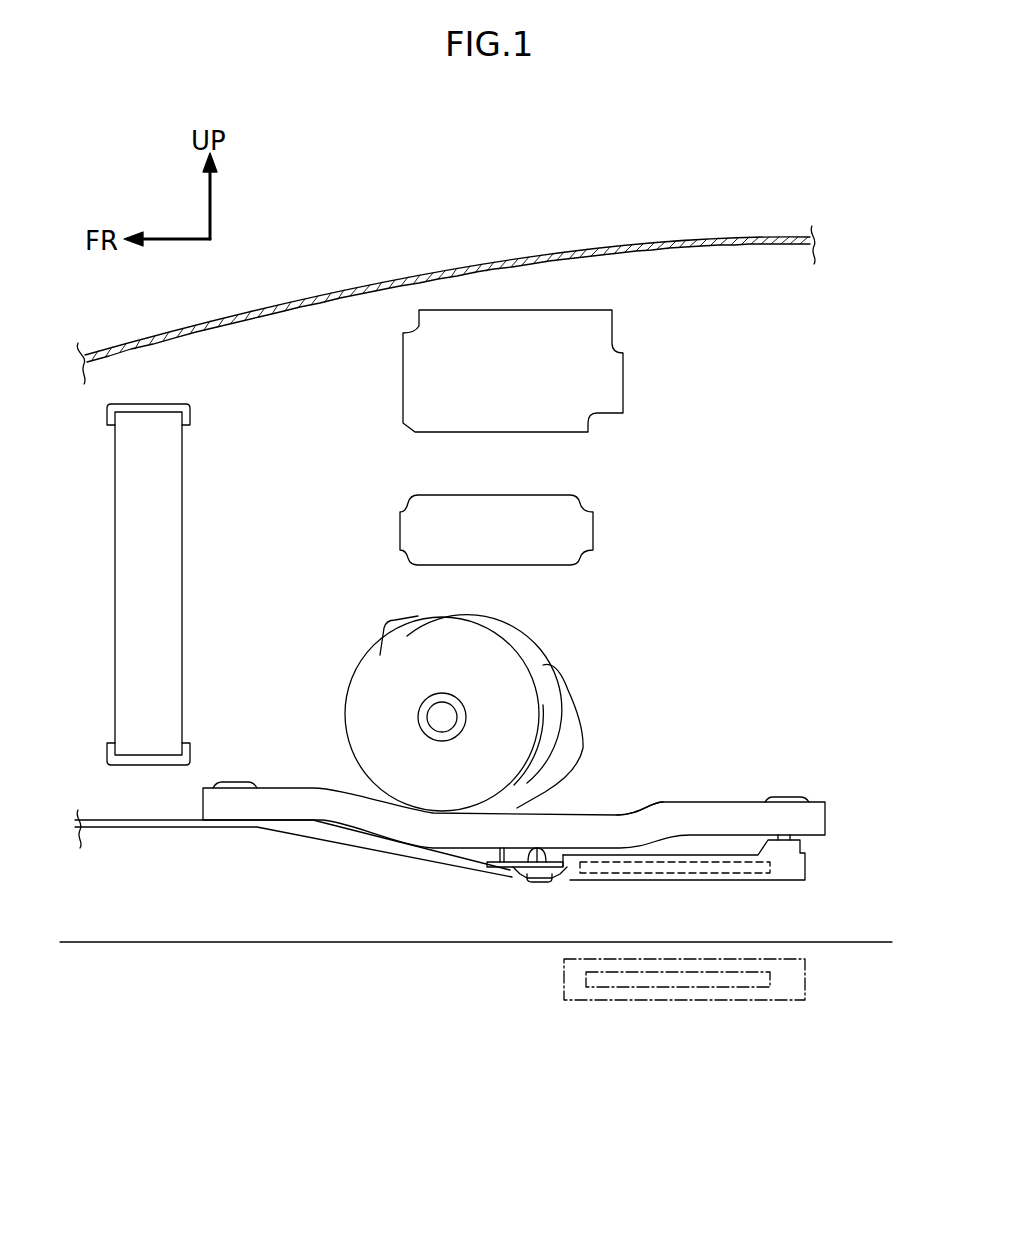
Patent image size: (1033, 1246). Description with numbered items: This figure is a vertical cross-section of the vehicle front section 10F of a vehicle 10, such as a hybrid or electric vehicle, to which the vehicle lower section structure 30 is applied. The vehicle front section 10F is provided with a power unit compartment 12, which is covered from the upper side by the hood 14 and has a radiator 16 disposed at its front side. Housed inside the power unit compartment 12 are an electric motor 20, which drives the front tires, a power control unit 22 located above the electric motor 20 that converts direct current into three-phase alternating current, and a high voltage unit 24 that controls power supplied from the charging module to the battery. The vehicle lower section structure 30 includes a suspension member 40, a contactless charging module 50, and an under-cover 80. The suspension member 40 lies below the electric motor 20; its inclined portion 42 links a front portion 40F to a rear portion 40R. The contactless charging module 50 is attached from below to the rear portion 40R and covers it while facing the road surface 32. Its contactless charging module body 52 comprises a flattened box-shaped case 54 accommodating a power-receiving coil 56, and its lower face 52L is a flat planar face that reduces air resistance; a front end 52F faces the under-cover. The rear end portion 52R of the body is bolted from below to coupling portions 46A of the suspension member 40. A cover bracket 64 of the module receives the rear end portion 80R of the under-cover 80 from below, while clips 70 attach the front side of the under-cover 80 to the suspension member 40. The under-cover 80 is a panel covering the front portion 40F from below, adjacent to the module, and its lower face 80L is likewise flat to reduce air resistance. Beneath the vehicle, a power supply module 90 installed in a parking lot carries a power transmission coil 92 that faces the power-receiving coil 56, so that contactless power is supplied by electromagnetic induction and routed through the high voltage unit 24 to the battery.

The vehicle 10 is at (855, 192).
The vehicle front section 10F is at (753, 239).
The power unit compartment 12 is at (780, 418).
The hood 14 is at (668, 238).
The radiator 16 is at (183, 536).
The electric motor 20 is at (540, 665).
The power control unit 22 is at (575, 500).
The high voltage unit 24 is at (613, 328).
The vehicle lower section structure 30 is at (759, 700).
The road surface 32 is at (880, 940).
The suspension member 40 is at (680, 801).
The front portion of the suspension member 40F is at (342, 789).
The rear portion of the suspension member 40R is at (744, 800).
The bracket inclined portion 42 is at (622, 823).
The coupling portions 46A is at (786, 838).
The contactless charging module 50 is at (808, 865).
The contactless charging module body 52 is at (710, 918).
The battery front end 52F is at (565, 856).
The lower face of the contactless charging module body 52L is at (645, 880).
The rear end portion of the contactless charging module body 52R is at (806, 880).
The case 54 is at (760, 880).
The power-receiving coil 56 is at (694, 873).
The cover bracket 64 is at (512, 872).
The clips 70 is at (538, 882).
The under-cover 80 is at (318, 838).
The lower face of the under-cover 80L is at (362, 845).
The rear end portion of the under-cover 80R is at (566, 878).
The power supply module 90 is at (752, 1000).
The power transmission coil 92 is at (703, 988).